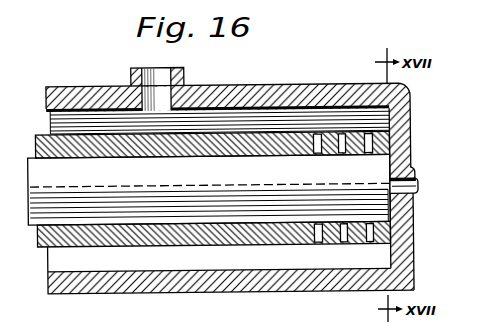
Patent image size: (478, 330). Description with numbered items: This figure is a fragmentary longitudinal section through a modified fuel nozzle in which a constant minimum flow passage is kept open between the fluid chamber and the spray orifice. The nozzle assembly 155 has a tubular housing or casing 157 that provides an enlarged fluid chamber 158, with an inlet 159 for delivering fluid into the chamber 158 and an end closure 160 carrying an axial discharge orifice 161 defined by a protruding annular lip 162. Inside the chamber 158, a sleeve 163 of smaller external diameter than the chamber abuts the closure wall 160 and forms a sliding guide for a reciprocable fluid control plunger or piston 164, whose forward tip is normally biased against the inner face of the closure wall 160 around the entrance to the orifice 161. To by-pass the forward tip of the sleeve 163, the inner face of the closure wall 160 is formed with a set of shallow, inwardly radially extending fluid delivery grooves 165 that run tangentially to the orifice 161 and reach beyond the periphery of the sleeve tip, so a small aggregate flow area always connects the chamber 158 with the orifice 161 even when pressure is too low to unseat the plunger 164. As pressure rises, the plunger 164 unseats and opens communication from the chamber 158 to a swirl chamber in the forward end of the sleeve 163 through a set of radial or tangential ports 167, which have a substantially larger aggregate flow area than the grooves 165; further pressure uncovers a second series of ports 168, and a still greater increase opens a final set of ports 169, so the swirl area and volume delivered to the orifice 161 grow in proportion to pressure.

The nozzle assembly 155 is at (271, 58).
The tubular housing 157 is at (276, 90).
The fluid chamber 158 is at (266, 266).
The inlet 159 is at (167, 80).
The end closure 160 is at (406, 142).
The discharge orifice 161 is at (407, 187).
The annular lip 162 is at (413, 171).
The sleeve 163 is at (177, 232).
The fluid control plunger 164 is at (188, 165).
The fluid delivery grooves 165 is at (398, 123).
The ports 167 is at (368, 232).
The second series of ports 168 is at (342, 243).
The final set of ports 169 is at (318, 234).